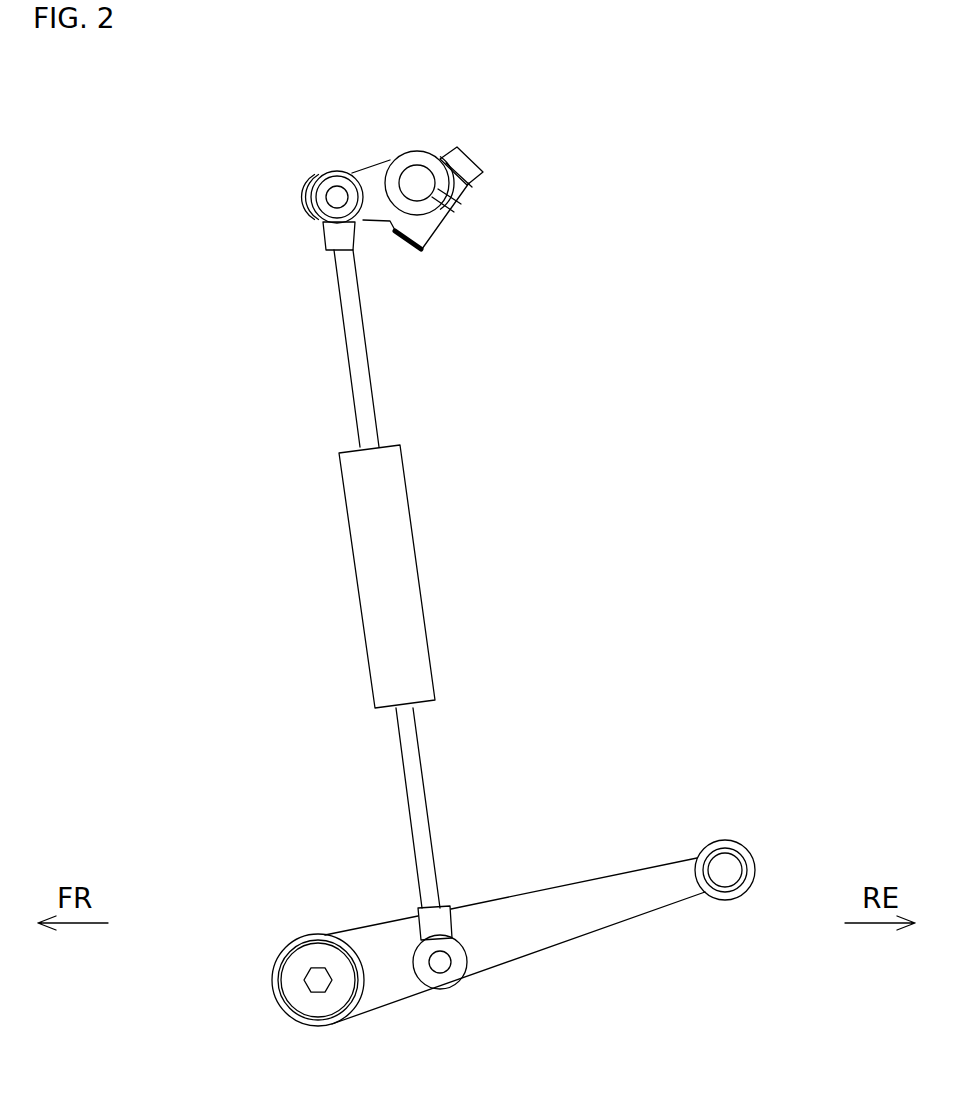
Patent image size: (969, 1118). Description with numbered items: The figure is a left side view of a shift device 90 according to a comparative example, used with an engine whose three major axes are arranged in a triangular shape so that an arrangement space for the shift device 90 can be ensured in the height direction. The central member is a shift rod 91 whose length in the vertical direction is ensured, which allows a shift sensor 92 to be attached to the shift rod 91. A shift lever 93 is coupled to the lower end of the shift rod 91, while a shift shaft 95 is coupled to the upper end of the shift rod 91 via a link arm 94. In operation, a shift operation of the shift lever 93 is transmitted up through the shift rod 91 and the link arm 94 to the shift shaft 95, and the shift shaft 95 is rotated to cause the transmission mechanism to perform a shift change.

The shift device 90 is at (252, 210).
The shift rod 91 is at (367, 340).
The shift sensor 92 is at (417, 557).
The shift lever 93 is at (520, 963).
The link arm 94 is at (388, 158).
The shift shaft 95 is at (422, 178).